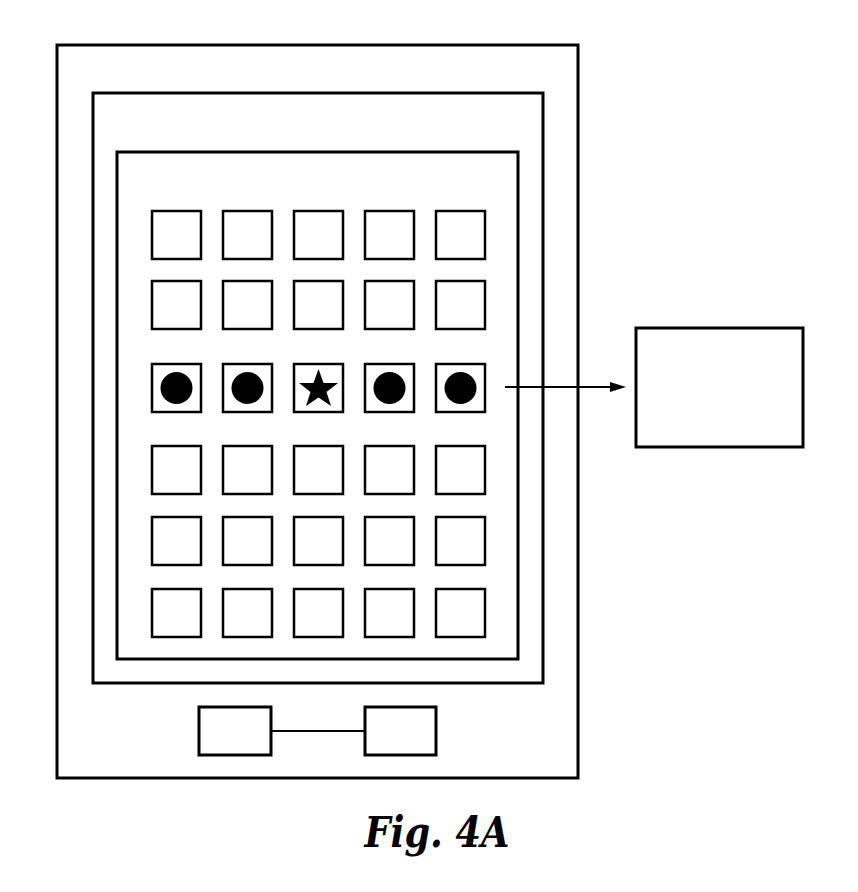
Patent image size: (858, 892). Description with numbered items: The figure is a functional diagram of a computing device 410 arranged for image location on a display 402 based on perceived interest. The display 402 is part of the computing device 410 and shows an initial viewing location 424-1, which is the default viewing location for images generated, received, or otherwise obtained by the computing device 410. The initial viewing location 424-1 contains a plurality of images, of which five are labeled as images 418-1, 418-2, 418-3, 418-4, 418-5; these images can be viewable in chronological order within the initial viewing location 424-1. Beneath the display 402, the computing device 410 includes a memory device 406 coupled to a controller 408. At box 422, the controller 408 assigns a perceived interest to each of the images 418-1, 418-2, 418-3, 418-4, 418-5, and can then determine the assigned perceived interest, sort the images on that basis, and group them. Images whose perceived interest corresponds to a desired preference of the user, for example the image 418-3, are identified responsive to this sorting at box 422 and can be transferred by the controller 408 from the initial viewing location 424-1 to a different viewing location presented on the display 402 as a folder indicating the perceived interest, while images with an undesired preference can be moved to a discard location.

The computing device 410 is at (177, 51).
The display 402 is at (188, 98).
The initial viewing location 424-1 is at (225, 158).
The image 418-1 is at (188, 368).
The image 418-2 is at (259, 408).
The image 418-3 is at (318, 368).
The image 418-4 is at (378, 408).
The image 418-5 is at (447, 368).
The box 422 is at (720, 333).
The memory device 406 is at (218, 742).
The controller 408 is at (383, 742).